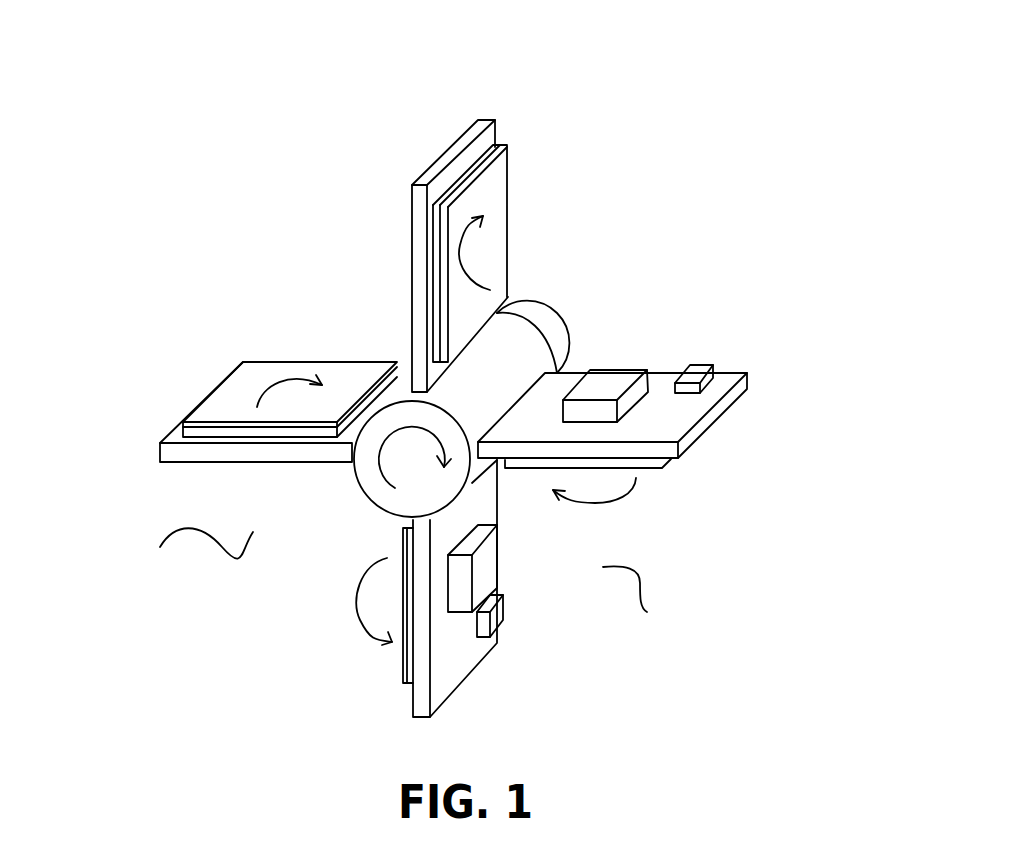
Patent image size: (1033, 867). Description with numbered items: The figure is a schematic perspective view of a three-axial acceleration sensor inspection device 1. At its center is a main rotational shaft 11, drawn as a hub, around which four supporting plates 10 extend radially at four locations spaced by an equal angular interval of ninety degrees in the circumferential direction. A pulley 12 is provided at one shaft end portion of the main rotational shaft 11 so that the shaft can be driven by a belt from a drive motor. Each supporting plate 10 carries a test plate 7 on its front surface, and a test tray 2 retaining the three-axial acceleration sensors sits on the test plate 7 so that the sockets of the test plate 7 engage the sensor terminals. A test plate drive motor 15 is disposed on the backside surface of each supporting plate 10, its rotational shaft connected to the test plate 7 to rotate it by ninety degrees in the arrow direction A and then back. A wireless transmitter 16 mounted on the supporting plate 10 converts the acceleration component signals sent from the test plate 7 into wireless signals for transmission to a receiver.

The three-axial acceleration sensor inspection device 1 is at (628, 178).
The test tray 2 is at (495, 193).
The test plate 7 is at (498, 140).
The supporting plate 10 is at (480, 123).
The main rotational shaft 11 is at (358, 490).
The pulley 12 is at (540, 315).
The test plate drive motor 15 is at (620, 373).
The wireless transmitter 16 is at (698, 368).